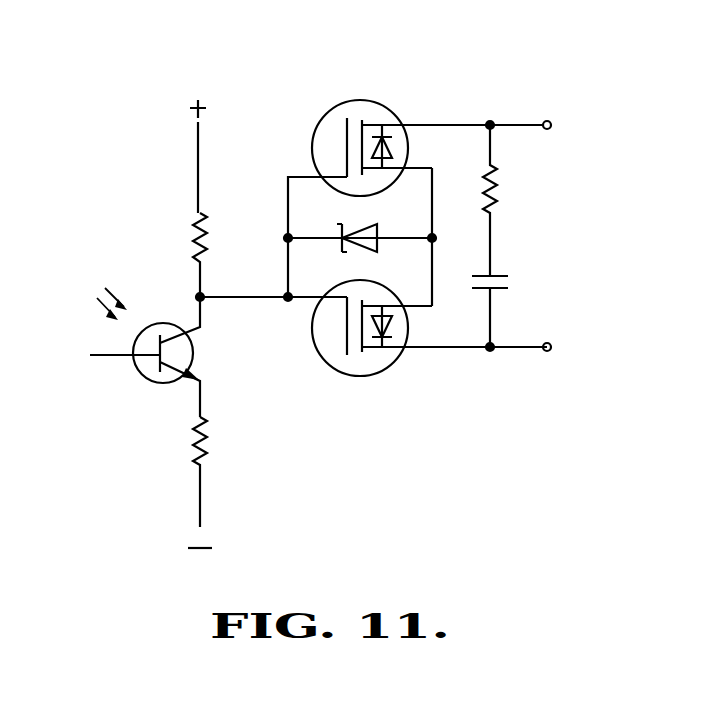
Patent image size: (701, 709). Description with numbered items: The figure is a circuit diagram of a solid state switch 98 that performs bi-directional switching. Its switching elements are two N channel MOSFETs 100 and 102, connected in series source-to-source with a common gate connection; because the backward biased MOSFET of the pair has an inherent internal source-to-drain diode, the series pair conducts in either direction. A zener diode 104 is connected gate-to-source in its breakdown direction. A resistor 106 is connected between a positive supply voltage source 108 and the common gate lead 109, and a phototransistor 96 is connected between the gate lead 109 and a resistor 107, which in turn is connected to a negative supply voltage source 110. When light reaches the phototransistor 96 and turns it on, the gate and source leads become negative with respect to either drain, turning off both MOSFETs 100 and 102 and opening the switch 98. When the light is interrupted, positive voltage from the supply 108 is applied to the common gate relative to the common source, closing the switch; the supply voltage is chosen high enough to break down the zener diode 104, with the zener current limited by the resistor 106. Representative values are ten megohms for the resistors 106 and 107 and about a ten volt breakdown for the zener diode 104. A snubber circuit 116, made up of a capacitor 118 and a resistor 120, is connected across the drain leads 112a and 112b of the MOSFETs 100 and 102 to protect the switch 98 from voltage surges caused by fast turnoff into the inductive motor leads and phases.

The phototransistor 96 is at (144, 381).
The solid state switch 98 is at (448, 463).
The N channel MOSFET 100 is at (359, 100).
The N channel MOSFET 102 is at (321, 355).
The zener diode 104 is at (364, 224).
The resistor 106 is at (197, 222).
The resistor 107 is at (210, 438).
The positive supply voltage source 108 is at (195, 109).
The gate lead 109 is at (300, 175).
The negative supply voltage source 110 is at (208, 547).
The drain lead 112a is at (447, 123).
The drain lead 112b is at (449, 350).
The snubber circuit 116 is at (522, 235).
The capacitor 118 is at (505, 290).
The resistor 120 is at (505, 188).